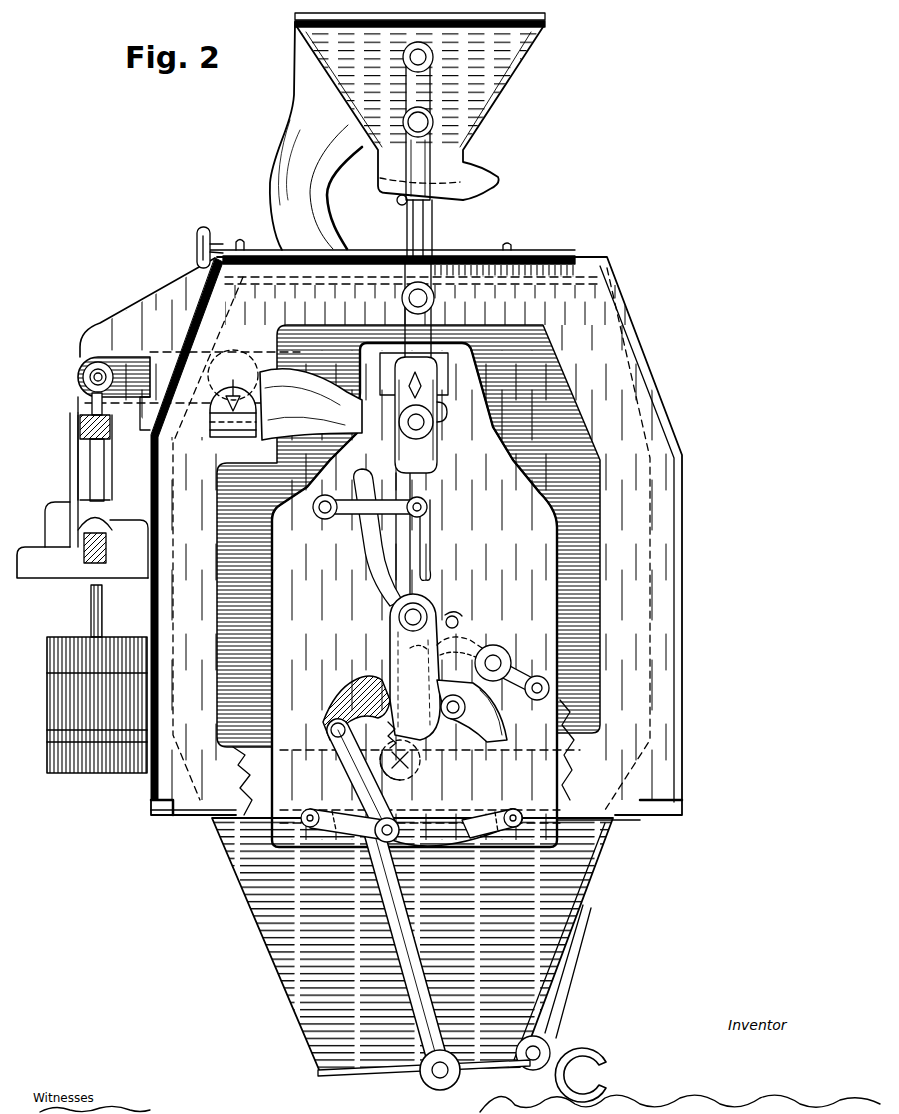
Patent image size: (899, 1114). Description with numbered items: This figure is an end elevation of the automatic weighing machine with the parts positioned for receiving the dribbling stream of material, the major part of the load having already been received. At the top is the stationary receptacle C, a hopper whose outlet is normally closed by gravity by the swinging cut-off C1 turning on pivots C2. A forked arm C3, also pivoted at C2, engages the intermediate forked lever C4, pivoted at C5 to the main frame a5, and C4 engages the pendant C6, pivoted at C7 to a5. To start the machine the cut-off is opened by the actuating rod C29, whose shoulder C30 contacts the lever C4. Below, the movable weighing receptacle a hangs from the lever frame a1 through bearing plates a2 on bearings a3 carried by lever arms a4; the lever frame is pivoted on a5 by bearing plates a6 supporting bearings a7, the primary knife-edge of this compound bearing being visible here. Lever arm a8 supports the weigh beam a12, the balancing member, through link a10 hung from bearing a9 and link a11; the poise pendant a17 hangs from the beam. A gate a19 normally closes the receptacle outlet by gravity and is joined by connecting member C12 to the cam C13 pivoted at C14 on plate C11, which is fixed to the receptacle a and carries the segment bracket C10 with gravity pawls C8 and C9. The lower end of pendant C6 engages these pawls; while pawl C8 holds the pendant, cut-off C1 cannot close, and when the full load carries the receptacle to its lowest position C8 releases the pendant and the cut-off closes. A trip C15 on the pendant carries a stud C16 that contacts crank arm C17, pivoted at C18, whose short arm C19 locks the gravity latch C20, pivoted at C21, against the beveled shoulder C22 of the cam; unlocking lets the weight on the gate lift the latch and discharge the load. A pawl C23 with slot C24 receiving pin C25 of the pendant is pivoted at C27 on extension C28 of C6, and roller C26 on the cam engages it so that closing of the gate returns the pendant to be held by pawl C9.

The stationary receptacle C is at (407, 131).
The swinging cut-off C1 is at (398, 203).
The pivots C2 is at (417, 48).
The forked arm C3 is at (418, 107).
The intermediate forked lever C4 is at (432, 222).
The pivot C5 is at (408, 295).
The pendant C6 is at (416, 415).
The pivot C7 is at (399, 617).
The gravity pawl C8 is at (387, 824).
The gravity pawl C9 is at (457, 826).
The segment bracket C10 is at (310, 827).
The plate C11 is at (426, 595).
The connecting member C12 is at (342, 768).
The cam C13 is at (376, 735).
The pivot C14 is at (397, 770).
The trip C15 is at (376, 507).
The stud C16 is at (314, 508).
The crank arm C17 is at (362, 526).
The pivot C18 is at (455, 620).
The short arm C19 is at (460, 642).
The gravity latch C20 is at (516, 675).
The pivot C21 is at (538, 700).
The beveled shoulder C22 is at (472, 711).
The pawl C23 is at (377, 667).
The slot C24 is at (427, 661).
The pin C25 is at (427, 651).
The roller C26 is at (455, 720).
The pivot C27 is at (494, 655).
The extension C28 is at (473, 637).
The actuating rod C29 is at (197, 250).
The shoulder C30 is at (402, 250).
The movable weighing receptacle a is at (349, 679).
The lever frame a1 is at (148, 402).
The bearing plates a2 is at (433, 372).
The bearings a3 is at (440, 405).
The lever arms a4 is at (311, 404).
The main frame a5 is at (412, 596).
The bearing plates a6 is at (220, 438).
The bearings a7 is at (233, 380).
The lever arm a8 is at (114, 378).
The bearing a9 is at (82, 377).
The link a10 is at (92, 403).
The link a11 is at (110, 428).
The weigh beam a12 is at (104, 458).
The poise pendant a17 is at (52, 774).
The gate a19 is at (372, 1075).